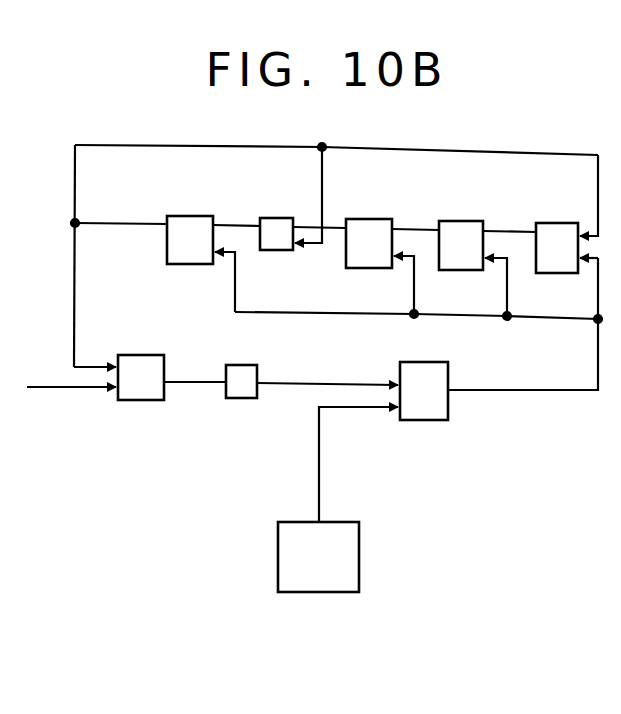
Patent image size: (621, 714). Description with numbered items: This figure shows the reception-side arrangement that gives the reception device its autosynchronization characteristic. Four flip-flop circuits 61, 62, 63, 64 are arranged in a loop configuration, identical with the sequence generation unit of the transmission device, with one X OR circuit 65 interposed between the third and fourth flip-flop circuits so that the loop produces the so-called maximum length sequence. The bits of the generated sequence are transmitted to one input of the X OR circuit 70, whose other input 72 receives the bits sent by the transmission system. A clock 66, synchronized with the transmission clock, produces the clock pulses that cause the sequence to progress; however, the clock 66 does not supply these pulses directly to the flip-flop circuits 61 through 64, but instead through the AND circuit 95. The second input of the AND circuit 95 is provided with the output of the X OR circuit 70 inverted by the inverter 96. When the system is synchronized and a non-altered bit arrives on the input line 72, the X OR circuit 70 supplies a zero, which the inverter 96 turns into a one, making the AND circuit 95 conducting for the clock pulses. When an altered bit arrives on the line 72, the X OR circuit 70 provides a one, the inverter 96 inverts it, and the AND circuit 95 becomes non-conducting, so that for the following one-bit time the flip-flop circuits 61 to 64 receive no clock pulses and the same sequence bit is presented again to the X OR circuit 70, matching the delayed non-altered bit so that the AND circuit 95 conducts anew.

The flip-flop circuit 61 is at (568, 223).
The flip-flop circuit 62 is at (460, 221).
The flip-flop circuit 63 is at (362, 219).
The flip-flop circuit 64 is at (197, 216).
The X OR circuit 65 is at (283, 218).
The clock 66 is at (279, 547).
The X OR circuit 70 is at (135, 400).
The input 72 is at (80, 385).
The AND circuit 95 is at (448, 363).
The inverter 96 is at (258, 365).